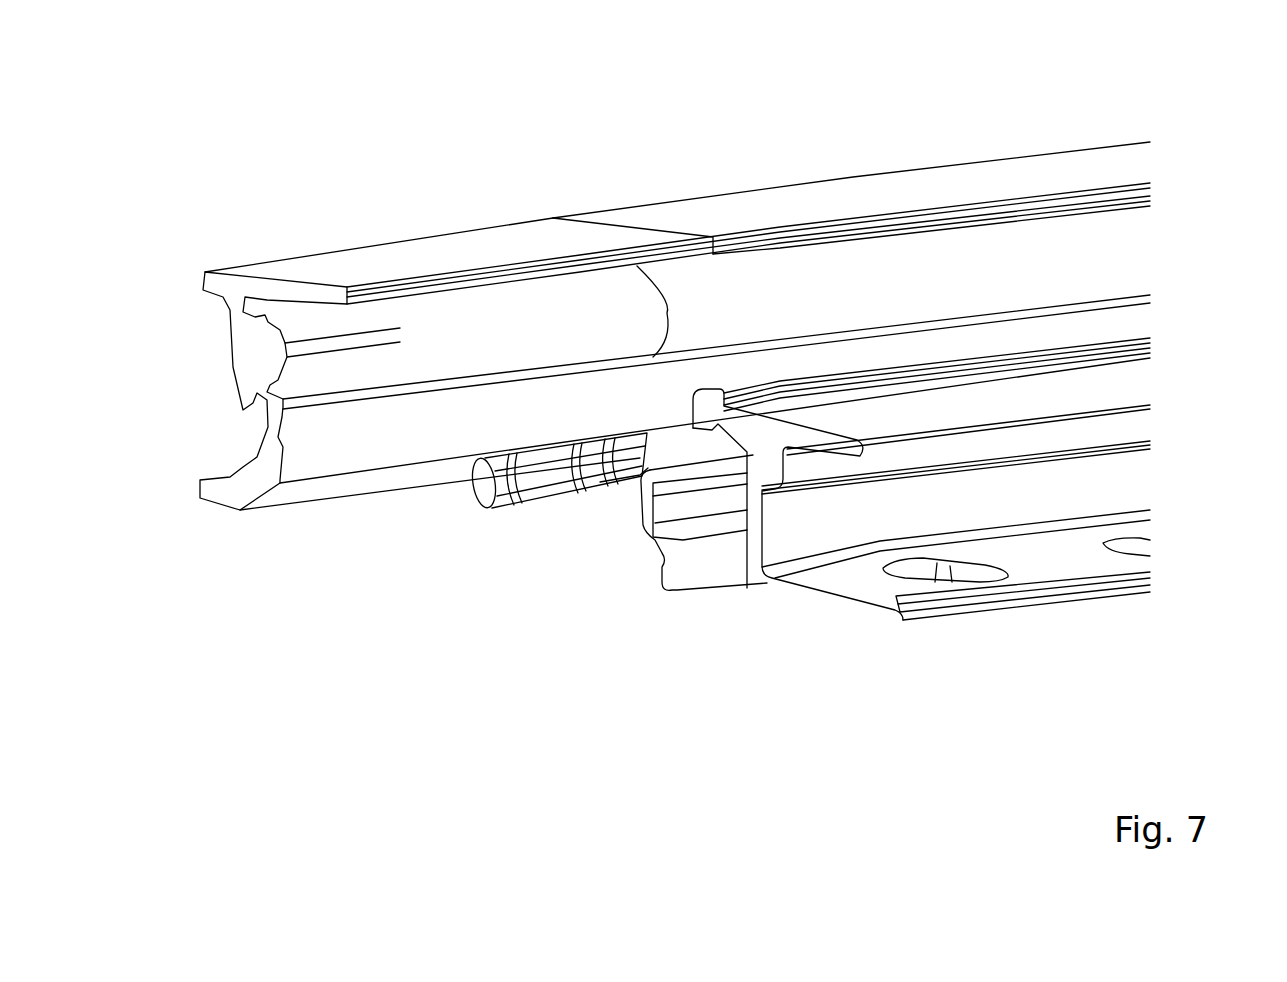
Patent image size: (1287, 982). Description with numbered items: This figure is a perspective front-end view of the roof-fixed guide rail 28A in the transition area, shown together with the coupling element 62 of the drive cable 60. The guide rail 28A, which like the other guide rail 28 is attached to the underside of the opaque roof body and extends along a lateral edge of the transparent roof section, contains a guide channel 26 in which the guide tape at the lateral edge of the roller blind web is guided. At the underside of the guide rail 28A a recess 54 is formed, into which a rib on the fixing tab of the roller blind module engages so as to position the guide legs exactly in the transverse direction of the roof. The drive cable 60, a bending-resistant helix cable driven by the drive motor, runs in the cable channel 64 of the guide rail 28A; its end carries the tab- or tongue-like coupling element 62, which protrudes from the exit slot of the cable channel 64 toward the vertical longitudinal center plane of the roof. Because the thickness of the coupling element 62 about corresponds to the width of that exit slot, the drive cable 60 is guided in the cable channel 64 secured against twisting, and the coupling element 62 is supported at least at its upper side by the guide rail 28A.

The guide rail 28A is at (850, 203).
The guide rail 28 is at (675, 364).
The guide channel 26 is at (752, 462).
The recess 54 is at (737, 535).
The drive cable 60 is at (622, 480).
The coupling element 62 is at (537, 475).
The cable channel 64 is at (634, 487).